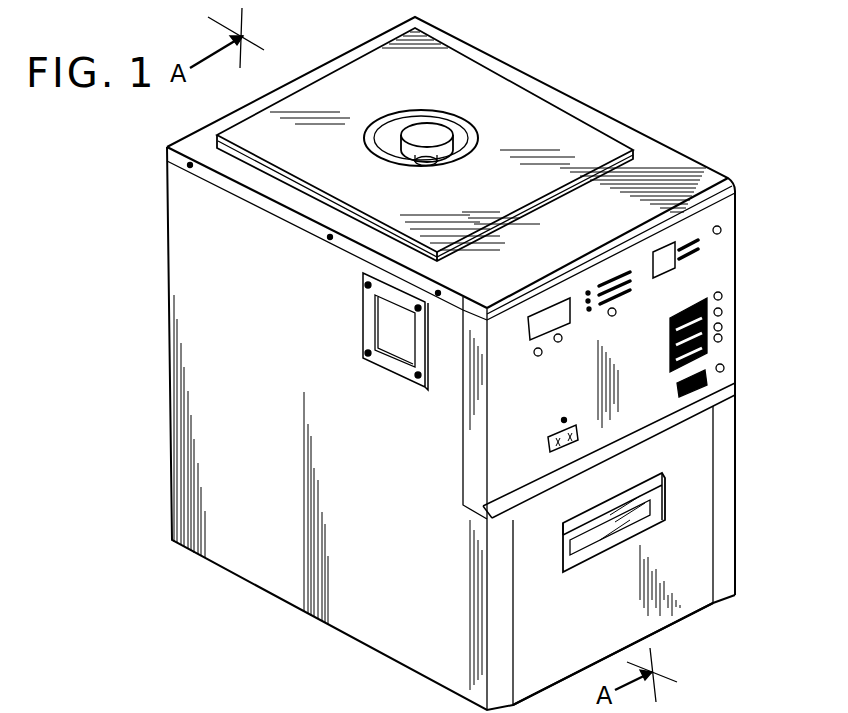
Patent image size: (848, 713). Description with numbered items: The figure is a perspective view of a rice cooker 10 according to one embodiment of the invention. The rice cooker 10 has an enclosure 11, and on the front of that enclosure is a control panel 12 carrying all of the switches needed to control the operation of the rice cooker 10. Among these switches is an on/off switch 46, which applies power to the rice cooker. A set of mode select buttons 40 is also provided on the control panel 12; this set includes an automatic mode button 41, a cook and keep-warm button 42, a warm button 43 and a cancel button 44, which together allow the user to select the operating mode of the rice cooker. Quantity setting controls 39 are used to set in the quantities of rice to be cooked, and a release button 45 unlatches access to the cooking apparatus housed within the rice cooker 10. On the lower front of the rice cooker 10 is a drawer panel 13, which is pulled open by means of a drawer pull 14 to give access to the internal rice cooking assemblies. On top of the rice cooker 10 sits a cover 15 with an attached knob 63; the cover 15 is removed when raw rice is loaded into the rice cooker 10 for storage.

The rice cooker 10 is at (185, 330).
The enclosure 11 is at (172, 470).
The control panel 12 is at (492, 505).
The drawer panel 13 is at (695, 547).
The drawer pull 14 is at (565, 575).
The cover 15 is at (555, 112).
The quantity setting controls 39 is at (690, 238).
The set of mode select buttons 40 is at (730, 317).
The automatic mode button 41 is at (721, 297).
The cook and keep-warm button 42 is at (722, 308).
The warm button 43 is at (724, 332).
The cancel button 44 is at (724, 344).
The release button 45 is at (724, 373).
The on/off switch 46 is at (560, 426).
The knob 63 is at (415, 133).